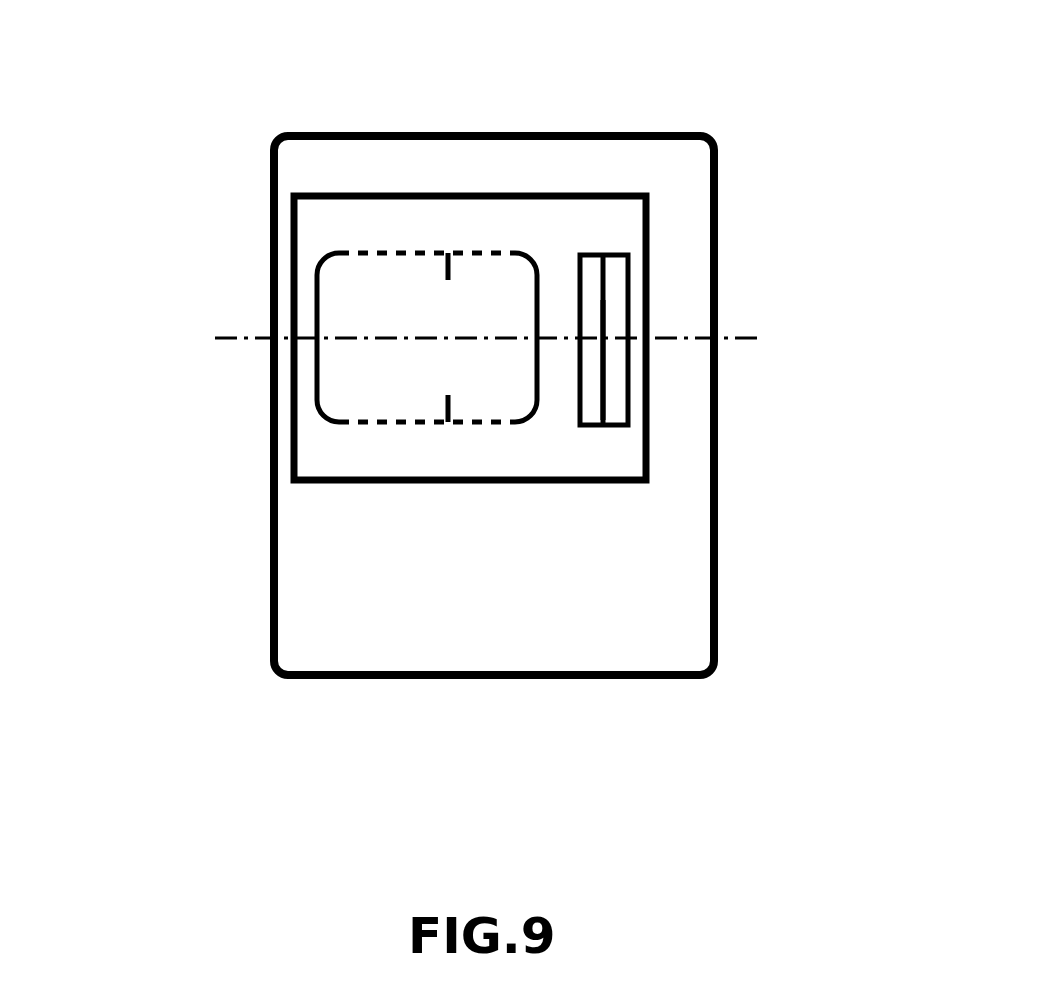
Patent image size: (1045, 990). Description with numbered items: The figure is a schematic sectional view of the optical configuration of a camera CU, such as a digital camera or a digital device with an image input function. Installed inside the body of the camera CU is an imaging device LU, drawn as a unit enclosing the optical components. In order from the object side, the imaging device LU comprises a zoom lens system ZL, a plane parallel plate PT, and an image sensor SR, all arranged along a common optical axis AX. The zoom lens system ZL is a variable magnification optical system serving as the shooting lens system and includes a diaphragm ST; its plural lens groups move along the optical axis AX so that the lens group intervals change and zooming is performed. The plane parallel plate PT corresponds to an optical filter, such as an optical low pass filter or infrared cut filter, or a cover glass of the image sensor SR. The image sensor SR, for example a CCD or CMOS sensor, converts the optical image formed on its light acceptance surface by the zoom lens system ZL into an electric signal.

The camera CU is at (258, 600).
The imaging device LU is at (384, 502).
The zoom lens system ZL is at (392, 236).
The diaphragm ST is at (442, 236).
The optical axis AX is at (237, 355).
The plane parallel plate PT is at (599, 236).
The image sensor SR is at (626, 236).